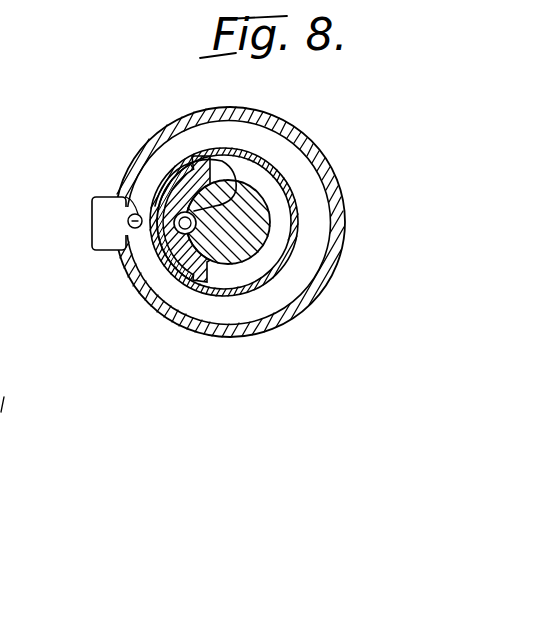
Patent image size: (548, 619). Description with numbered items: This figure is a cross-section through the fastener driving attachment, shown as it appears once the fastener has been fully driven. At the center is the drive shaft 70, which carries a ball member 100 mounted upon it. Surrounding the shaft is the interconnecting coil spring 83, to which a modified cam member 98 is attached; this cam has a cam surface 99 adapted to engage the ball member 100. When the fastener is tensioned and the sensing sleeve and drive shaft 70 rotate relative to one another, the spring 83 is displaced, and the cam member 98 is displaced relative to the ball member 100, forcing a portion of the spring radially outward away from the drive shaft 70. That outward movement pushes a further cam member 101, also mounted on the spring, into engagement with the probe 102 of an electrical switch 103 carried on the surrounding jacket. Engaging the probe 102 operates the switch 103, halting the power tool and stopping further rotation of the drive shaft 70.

The drive shaft 70 is at (250, 198).
The interconnecting coil spring 83 is at (302, 218).
The cam member 98 is at (190, 282).
The cam surface 99 is at (192, 187).
The ball member 100 is at (233, 150).
The cam member 101 is at (110, 273).
The probe 102 is at (105, 152).
The electrical switch 103 is at (63, 212).